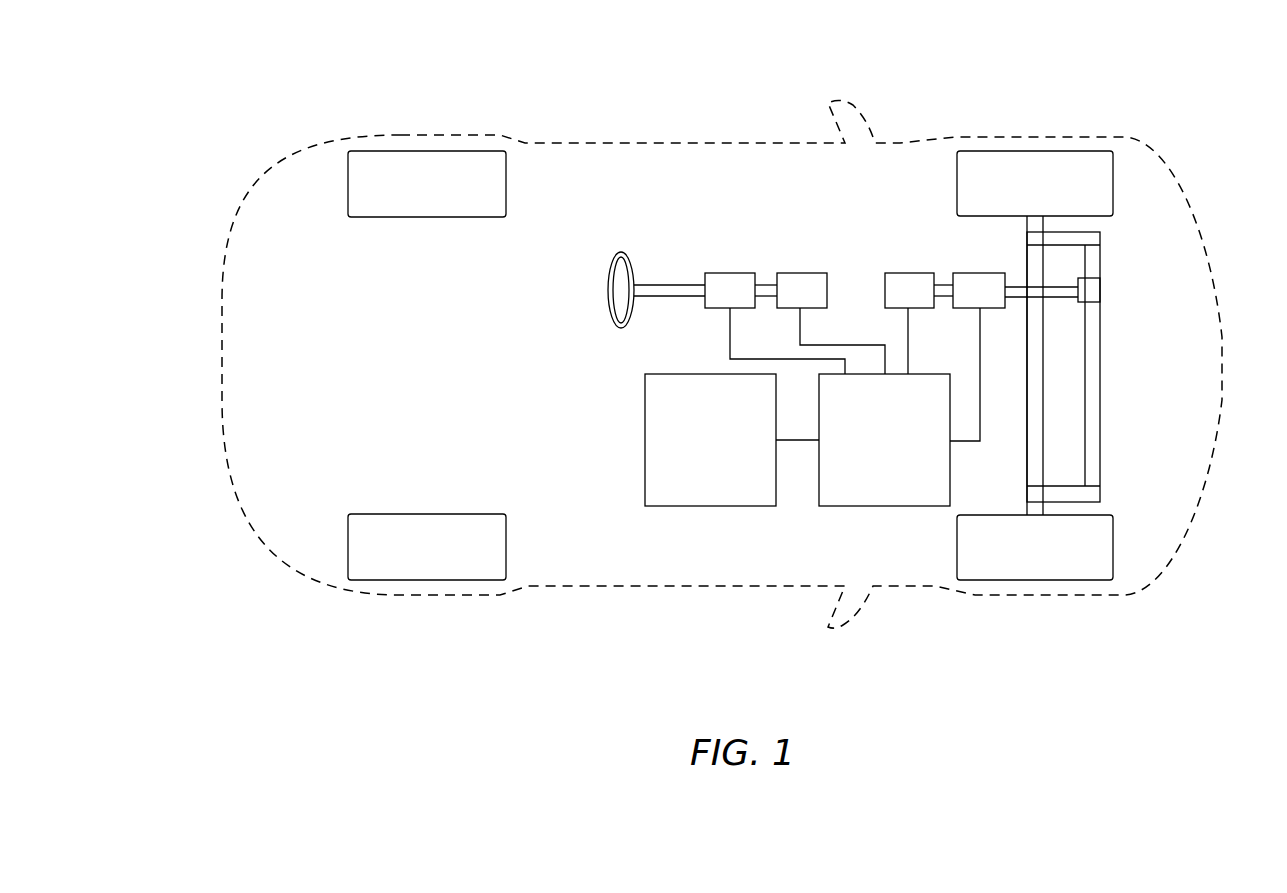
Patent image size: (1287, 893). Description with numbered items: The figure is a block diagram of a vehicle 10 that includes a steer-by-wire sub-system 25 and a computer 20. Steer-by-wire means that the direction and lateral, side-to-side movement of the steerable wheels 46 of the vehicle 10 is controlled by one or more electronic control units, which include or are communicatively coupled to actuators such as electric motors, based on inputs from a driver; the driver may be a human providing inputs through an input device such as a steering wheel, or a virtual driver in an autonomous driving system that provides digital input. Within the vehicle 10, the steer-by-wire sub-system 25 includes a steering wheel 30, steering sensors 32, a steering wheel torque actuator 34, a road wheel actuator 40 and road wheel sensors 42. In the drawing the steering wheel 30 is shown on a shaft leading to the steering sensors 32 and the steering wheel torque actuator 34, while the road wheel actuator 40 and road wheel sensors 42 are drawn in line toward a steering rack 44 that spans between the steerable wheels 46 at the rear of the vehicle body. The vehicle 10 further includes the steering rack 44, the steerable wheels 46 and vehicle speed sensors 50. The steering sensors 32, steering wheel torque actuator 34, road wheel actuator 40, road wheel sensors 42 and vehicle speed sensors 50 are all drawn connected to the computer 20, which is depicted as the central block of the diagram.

The vehicle 10 is at (206, 86).
The computer 20 is at (863, 440).
The steer-by-wire sub-system 25 is at (770, 187).
The steering wheel 30 is at (633, 272).
The steering sensors 32 is at (740, 272).
The steering wheel torque actuator 34 is at (813, 272).
The road wheel actuator 40 is at (922, 272).
The road wheel sensors 42 is at (995, 273).
The steering rack 44 is at (1095, 265).
The steerable wheels 46 is at (1046, 165).
The vehicle speed sensors 50 is at (710, 440).